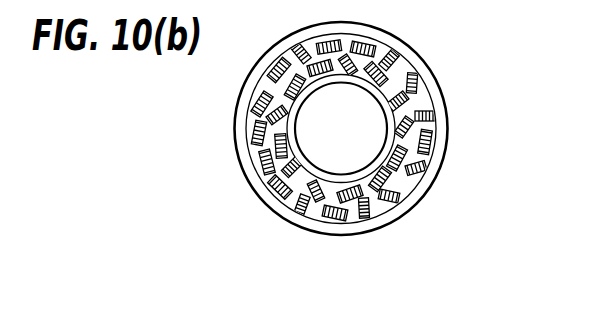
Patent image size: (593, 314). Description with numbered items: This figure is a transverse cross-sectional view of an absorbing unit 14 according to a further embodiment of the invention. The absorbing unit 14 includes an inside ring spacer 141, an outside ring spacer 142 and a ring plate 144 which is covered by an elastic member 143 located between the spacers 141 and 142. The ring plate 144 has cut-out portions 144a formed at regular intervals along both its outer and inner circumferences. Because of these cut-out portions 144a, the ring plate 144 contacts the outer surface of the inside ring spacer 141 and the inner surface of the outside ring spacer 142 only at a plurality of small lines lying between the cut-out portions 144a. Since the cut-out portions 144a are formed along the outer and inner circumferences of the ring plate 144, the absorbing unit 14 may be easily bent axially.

The absorbing unit 14 is at (434, 56).
The inside ring spacer 141 is at (373, 223).
The outside ring spacer 142 is at (438, 97).
The elastic member 143 is at (442, 116).
The ring plate 144 is at (437, 150).
The cut-out portions 144a is at (423, 187).